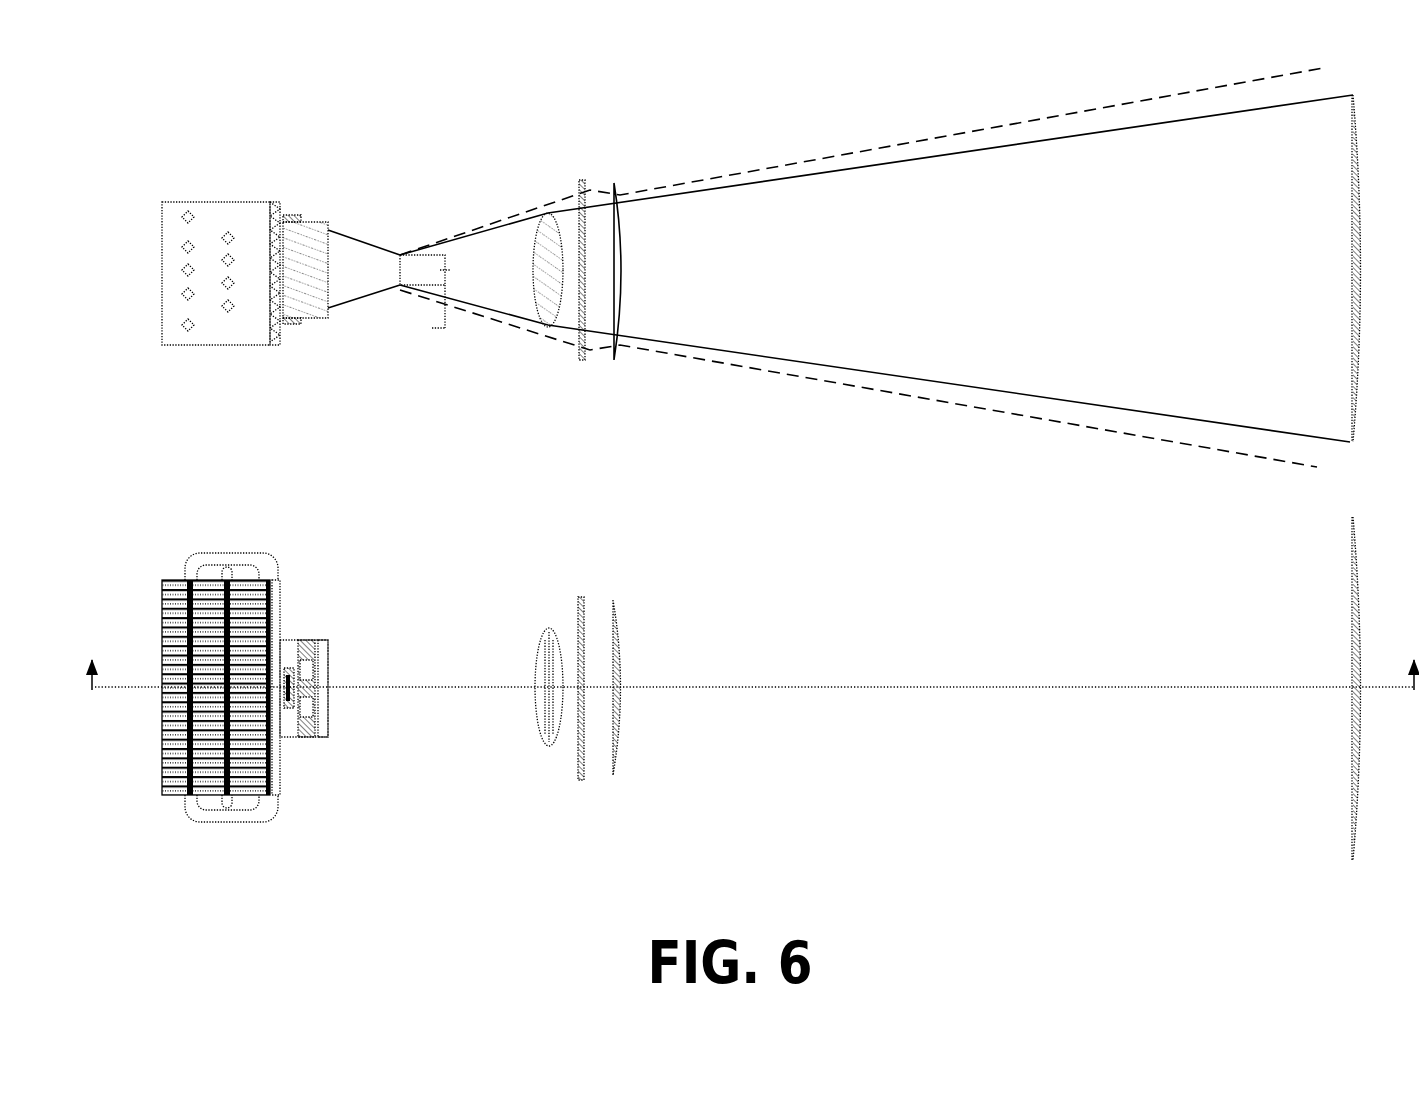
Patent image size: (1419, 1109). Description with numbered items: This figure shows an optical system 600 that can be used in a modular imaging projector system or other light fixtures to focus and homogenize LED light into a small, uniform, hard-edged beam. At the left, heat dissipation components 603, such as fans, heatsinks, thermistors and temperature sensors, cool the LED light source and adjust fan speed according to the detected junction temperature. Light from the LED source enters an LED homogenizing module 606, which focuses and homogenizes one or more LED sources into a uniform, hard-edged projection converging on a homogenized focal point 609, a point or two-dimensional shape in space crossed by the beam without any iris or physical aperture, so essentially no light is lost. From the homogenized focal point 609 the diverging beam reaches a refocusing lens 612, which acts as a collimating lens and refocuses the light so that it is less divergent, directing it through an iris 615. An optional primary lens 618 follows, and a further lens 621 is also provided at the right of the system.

The optical system 600 is at (205, 120).
The heat dissipation components 603 is at (212, 354).
The LED homogenizing module 606 is at (308, 322).
The homogenized focal point 609 is at (399, 252).
The refocusing lens 612 is at (538, 312).
The iris 615 is at (577, 362).
The primary lens 618 is at (616, 364).
The lens 621 is at (1350, 449).